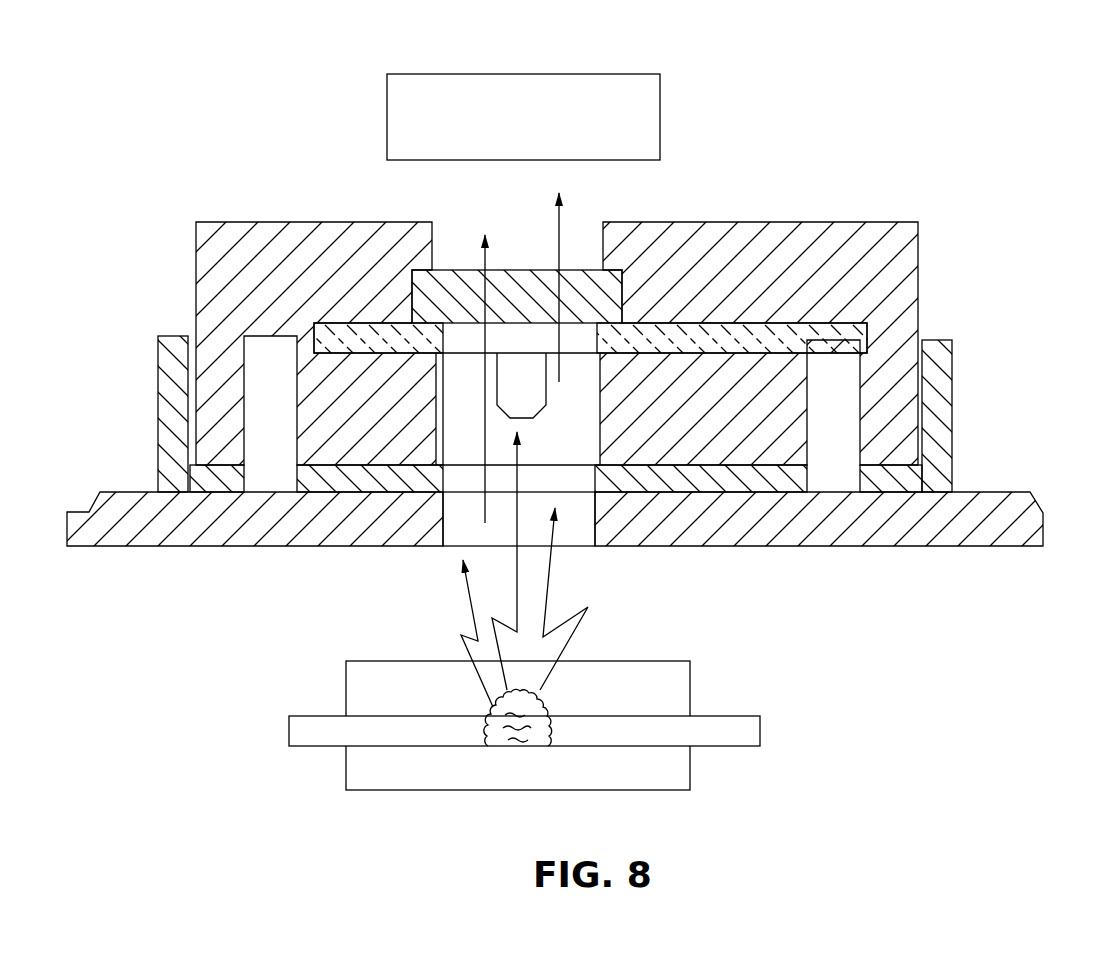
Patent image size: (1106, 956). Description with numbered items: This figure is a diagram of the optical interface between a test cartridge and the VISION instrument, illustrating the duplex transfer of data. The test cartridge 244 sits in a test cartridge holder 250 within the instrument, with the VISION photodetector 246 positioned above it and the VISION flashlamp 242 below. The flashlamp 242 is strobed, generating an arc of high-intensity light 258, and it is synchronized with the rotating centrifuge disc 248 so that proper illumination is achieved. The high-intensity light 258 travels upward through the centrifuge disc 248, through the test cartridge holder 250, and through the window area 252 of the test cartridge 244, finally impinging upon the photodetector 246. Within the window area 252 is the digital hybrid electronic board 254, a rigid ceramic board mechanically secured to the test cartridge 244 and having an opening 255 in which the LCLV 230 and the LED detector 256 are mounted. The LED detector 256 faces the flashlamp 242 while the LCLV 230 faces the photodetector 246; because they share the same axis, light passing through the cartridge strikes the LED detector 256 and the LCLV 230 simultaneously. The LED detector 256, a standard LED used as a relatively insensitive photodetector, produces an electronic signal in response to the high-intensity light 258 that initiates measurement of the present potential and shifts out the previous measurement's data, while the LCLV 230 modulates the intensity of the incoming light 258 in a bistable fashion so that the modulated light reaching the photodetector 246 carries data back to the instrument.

The LCLV 230 is at (610, 296).
The flashlamp 242 is at (505, 748).
The test cartridge 244 is at (228, 260).
The photodetector 246 is at (660, 103).
The centrifuge disc 248 is at (985, 555).
The test cartridge holder 250 is at (953, 373).
The window area 252 is at (562, 442).
The digital hybrid electronic board 254 is at (783, 320).
The opening 255 is at (330, 490).
The LED detector 256 is at (492, 367).
The high-intensity light 258 is at (463, 605).